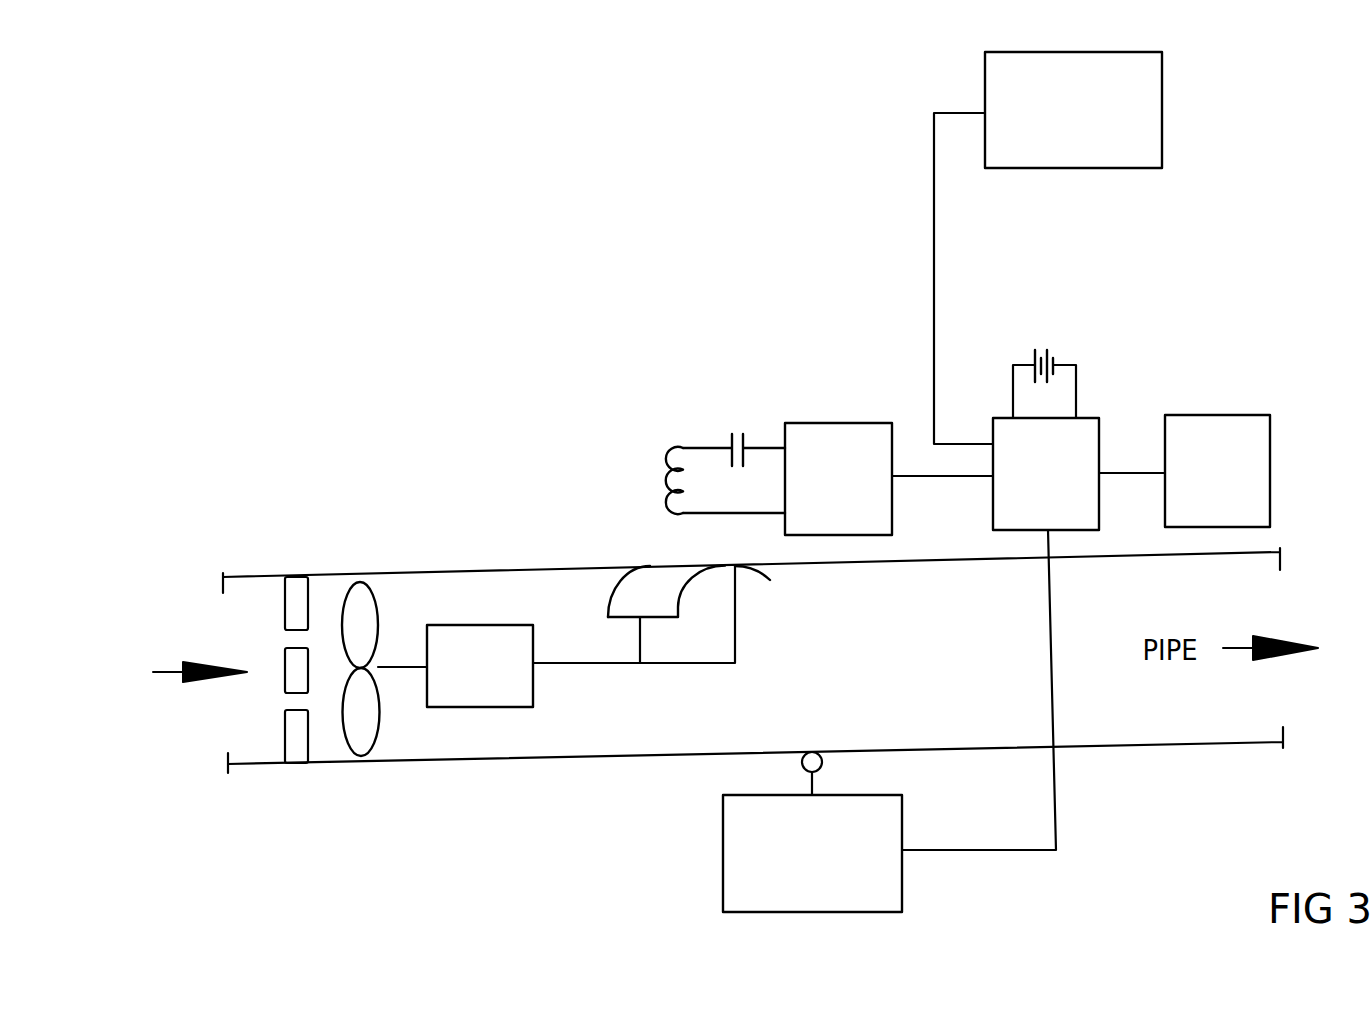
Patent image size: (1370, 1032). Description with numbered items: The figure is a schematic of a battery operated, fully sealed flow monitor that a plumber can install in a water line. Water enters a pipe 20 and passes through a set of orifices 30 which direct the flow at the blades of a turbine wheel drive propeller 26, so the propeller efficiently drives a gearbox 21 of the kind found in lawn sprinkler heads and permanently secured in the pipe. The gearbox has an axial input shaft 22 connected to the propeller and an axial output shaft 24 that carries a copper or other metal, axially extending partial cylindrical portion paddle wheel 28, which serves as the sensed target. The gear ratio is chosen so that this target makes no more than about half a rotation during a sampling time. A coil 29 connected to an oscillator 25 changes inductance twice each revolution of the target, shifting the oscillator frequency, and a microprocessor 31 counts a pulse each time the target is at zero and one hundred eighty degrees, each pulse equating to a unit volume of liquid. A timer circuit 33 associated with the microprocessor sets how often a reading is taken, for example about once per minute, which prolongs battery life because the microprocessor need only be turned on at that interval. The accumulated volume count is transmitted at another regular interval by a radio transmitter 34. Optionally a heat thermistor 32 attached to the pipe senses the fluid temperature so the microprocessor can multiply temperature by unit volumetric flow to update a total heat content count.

The pipe 20 is at (330, 575).
The gearbox 21 is at (451, 625).
The axial input shaft 22 is at (400, 668).
The axial output shaft 24 is at (583, 664).
The oscillator 25 is at (803, 423).
The turbine wheel drive propeller 26 is at (362, 740).
The partial cylindrical portion paddle wheel 28 is at (661, 588).
The coil 29 is at (666, 477).
The orifices 30 is at (296, 700).
The microprocessor 31 is at (1100, 433).
The heat thermistor 32 is at (801, 762).
The timer circuit 33 is at (1162, 101).
The radio transmitter 34 is at (1202, 415).